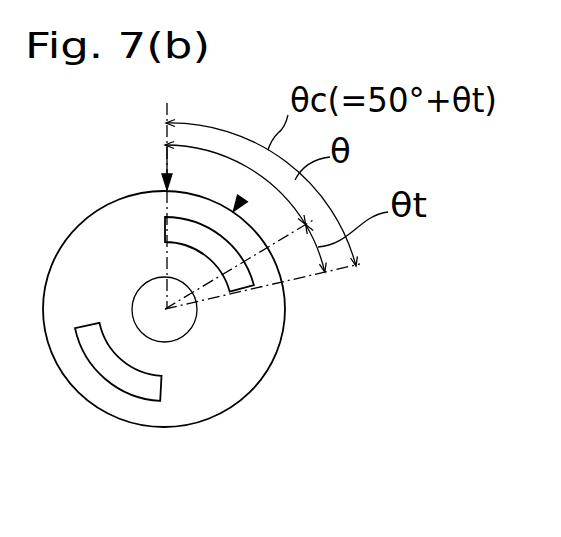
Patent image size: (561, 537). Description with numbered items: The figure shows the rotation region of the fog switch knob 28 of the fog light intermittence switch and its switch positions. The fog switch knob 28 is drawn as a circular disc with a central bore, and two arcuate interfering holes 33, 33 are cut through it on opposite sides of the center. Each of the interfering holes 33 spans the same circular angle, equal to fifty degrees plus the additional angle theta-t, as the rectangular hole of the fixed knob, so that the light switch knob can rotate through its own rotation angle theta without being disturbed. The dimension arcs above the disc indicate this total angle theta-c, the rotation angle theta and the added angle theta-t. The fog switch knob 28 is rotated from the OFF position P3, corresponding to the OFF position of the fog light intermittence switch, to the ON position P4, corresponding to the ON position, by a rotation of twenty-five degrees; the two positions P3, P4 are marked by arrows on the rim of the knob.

The fog switch knob 28 is at (212, 422).
The interfering holes 33 is at (245, 265).
The OFF position P3 is at (146, 165).
The ON position P4 is at (225, 184).